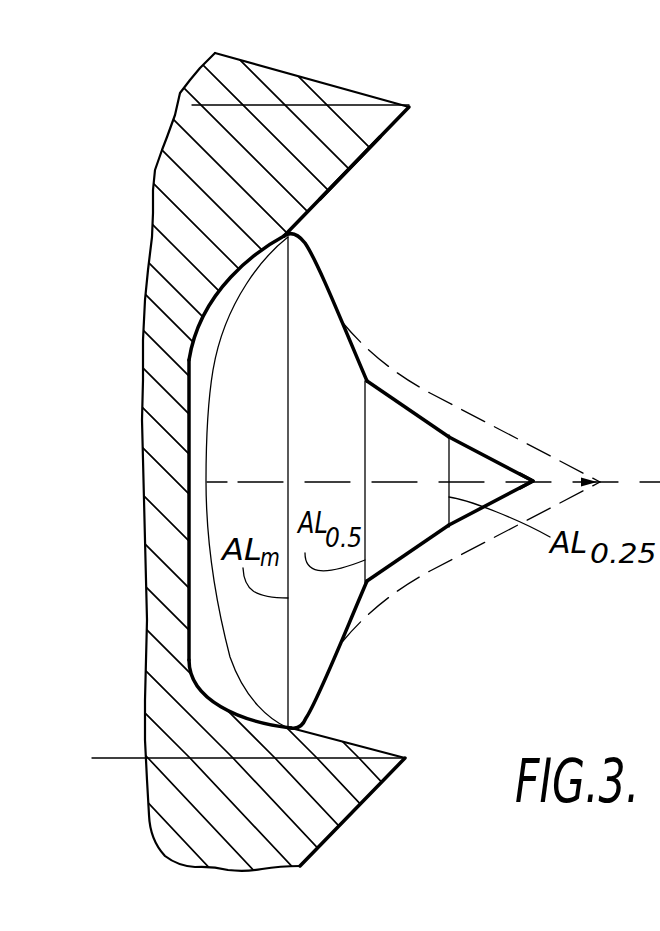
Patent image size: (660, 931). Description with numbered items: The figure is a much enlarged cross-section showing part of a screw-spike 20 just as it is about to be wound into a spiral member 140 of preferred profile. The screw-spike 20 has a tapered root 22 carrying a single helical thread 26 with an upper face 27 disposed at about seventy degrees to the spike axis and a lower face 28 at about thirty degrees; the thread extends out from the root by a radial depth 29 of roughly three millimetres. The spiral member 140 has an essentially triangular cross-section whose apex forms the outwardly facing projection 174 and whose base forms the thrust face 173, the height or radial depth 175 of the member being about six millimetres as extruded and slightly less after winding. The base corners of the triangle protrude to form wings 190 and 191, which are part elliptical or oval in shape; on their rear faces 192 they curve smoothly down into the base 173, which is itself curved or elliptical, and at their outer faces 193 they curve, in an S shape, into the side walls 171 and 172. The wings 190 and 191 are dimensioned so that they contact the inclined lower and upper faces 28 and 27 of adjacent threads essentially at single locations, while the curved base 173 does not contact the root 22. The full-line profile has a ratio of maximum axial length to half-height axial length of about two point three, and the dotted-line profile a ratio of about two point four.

The screw-spike 20 is at (170, 232).
The root 22 is at (168, 443).
The helical thread 26 is at (403, 85).
The upper face 27 is at (297, 72).
The lower face 28 is at (334, 186).
The radial depth of thread 29 is at (364, 124).
The spiral member 140 is at (393, 372).
The side wall 171 is at (442, 431).
The side wall 172 is at (431, 543).
The thrust face 173 is at (171, 549).
The outwardly facing projection 174 is at (536, 477).
The radial depth 175 is at (326, 480).
The wing 190 is at (341, 253).
The wing 191 is at (343, 701).
The rear face 192 is at (220, 341).
The outer face 193 is at (332, 296).